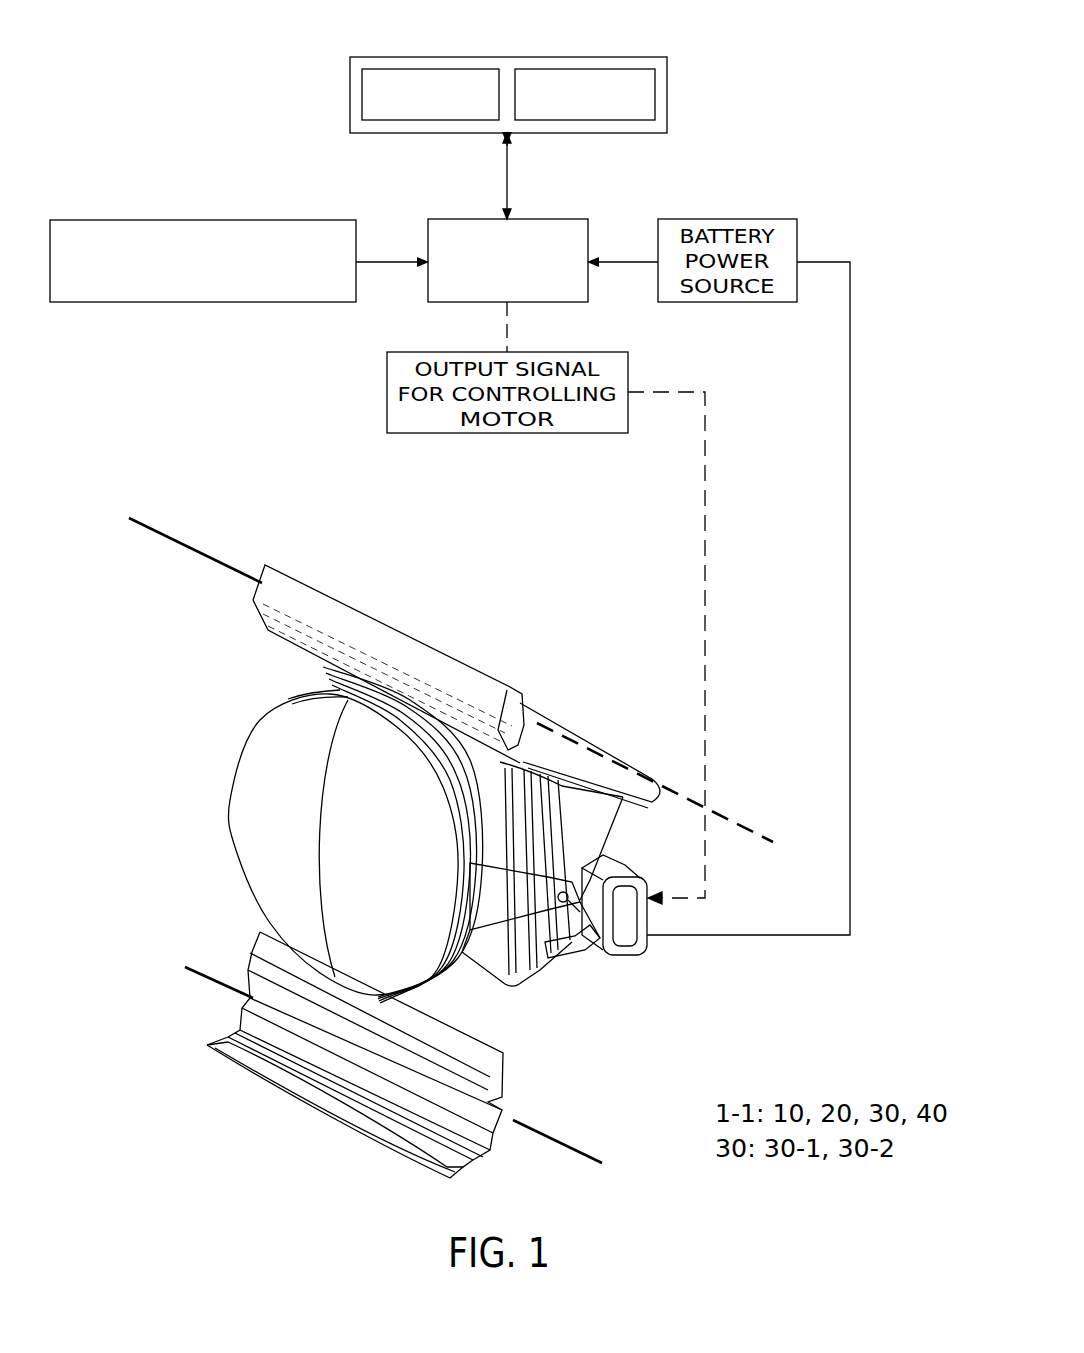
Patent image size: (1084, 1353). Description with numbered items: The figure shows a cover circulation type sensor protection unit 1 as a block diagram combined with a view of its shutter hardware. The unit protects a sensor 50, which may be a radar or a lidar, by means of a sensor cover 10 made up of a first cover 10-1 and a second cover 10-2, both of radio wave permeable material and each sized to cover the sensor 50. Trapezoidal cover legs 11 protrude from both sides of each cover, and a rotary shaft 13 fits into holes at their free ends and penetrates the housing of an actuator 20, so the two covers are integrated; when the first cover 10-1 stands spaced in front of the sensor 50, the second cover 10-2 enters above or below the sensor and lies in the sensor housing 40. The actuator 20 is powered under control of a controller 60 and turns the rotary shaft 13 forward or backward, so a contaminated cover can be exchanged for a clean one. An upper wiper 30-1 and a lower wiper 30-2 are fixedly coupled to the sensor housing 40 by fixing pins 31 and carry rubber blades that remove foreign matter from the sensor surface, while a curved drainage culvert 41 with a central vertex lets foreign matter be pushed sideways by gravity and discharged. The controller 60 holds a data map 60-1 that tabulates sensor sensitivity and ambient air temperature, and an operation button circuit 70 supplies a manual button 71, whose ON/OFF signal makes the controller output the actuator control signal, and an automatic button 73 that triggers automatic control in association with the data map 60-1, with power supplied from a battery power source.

The sensor protection unit 1 is at (160, 666).
The sensor cover 10 is at (553, 545).
The first cover 10-1 is at (385, 793).
The second cover 10-2 is at (537, 720).
The cover legs 11 is at (587, 827).
The rotary shaft 13 is at (585, 917).
The actuator 20 is at (552, 928).
The upper wiper 30-1 is at (327, 615).
The lower wiper 30-2 is at (253, 960).
The fixing pins 31 is at (510, 725).
The sensor housing 40 is at (154, 528).
The drainage culvert 41 is at (300, 1077).
The sensor 50 is at (530, 950).
The controller 60 is at (552, 219).
The data map 60-1 is at (203, 220).
The operation button circuit 70 is at (667, 72).
The manual button 71 is at (585, 69).
The automatic button 73 is at (428, 69).